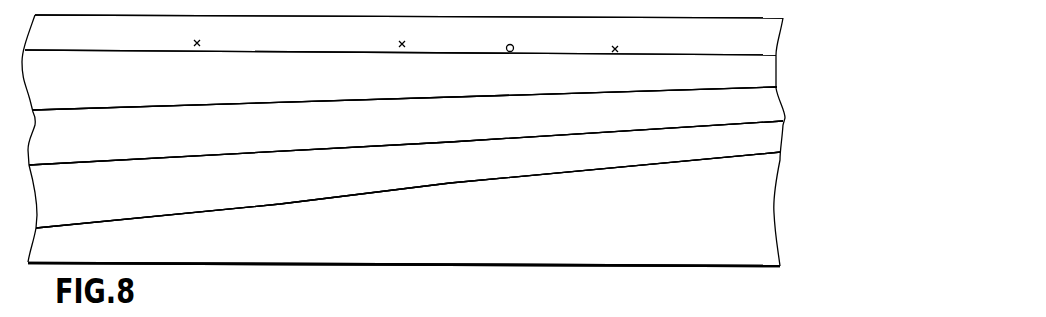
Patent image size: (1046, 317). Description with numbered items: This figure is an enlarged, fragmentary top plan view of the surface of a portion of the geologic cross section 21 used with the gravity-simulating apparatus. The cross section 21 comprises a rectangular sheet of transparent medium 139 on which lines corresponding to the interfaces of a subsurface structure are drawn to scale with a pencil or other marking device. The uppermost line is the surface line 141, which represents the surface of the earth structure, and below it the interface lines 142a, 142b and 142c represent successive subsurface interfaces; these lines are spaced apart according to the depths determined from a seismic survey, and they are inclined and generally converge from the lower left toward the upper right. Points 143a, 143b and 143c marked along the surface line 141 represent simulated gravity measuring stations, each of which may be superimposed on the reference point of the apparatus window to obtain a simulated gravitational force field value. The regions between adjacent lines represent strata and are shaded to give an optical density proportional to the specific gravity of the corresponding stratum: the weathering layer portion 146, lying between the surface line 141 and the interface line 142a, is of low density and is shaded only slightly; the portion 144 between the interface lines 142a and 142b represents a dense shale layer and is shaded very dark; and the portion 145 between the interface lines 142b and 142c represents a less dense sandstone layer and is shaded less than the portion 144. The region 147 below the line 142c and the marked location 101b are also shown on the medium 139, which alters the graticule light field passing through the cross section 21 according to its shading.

The geologic cross section 21 is at (628, 274).
The transparent medium 139 is at (414, 254).
The surface line 141 is at (145, 48).
The weathering layer portion 146 is at (195, 88).
The shale layer portion 144 is at (202, 143).
The sandstone layer portion 145 is at (222, 196).
The fourth layer 147 is at (250, 241).
The interface line 142a is at (344, 99).
The interface line 142b is at (359, 146).
The interface line 142c is at (366, 193).
The simulated gravity measuring station 143a is at (200, 43).
The simulated gravity measuring station 143b is at (405, 44).
The simulated gravity measuring station 143c is at (619, 48).
The reference location 101b is at (513, 45).